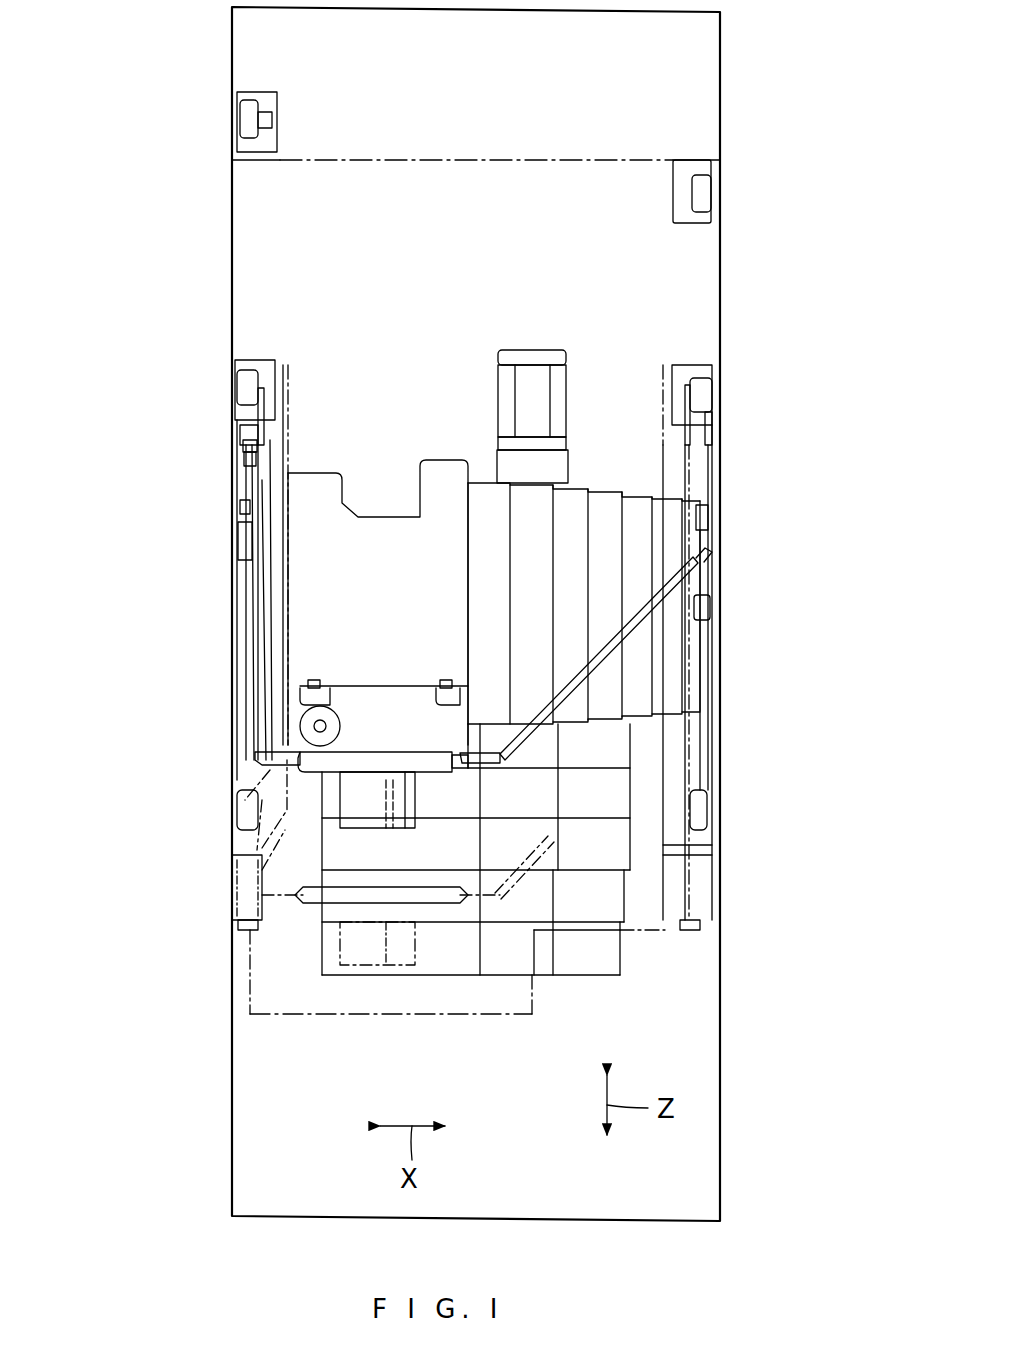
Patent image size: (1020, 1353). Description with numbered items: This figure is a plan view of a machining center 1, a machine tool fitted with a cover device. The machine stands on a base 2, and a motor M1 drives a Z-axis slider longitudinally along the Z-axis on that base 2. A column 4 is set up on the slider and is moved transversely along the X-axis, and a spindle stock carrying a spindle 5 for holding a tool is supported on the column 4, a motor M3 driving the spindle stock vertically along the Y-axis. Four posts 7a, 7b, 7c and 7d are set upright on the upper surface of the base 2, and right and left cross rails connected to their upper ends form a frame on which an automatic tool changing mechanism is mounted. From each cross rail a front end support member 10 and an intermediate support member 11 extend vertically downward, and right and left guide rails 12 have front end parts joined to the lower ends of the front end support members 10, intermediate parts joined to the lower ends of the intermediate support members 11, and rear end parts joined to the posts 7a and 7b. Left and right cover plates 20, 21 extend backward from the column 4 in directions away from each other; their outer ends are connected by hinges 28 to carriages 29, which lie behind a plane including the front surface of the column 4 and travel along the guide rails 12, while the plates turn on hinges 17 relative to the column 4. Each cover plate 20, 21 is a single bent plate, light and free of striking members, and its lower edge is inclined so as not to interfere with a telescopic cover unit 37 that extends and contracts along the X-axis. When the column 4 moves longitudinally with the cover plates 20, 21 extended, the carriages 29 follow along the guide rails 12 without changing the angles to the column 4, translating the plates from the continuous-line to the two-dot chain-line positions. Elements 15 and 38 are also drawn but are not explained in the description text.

The machining center 1 is at (200, 77).
The base 2 is at (245, 1103).
The column 4 is at (312, 548).
The spindle 5 is at (355, 800).
The post 7a is at (702, 392).
The post 7b is at (246, 386).
The post 7c is at (702, 190).
The post 7d is at (240, 128).
The front end support member 10 is at (700, 818).
The intermediate support member 11 is at (706, 607).
The guide rail 12 is at (252, 720).
The link arm 15 is at (640, 640).
The hinge 17 is at (242, 754).
The cover plate 20 is at (255, 634).
The cover plate 21 is at (572, 690).
The hinge 28 is at (230, 462).
The carriage 29 is at (246, 430).
The telescopic cover unit 37 is at (640, 497).
The table 38 is at (582, 872).
The motor M1 is at (560, 378).
The motor M3 is at (310, 720).